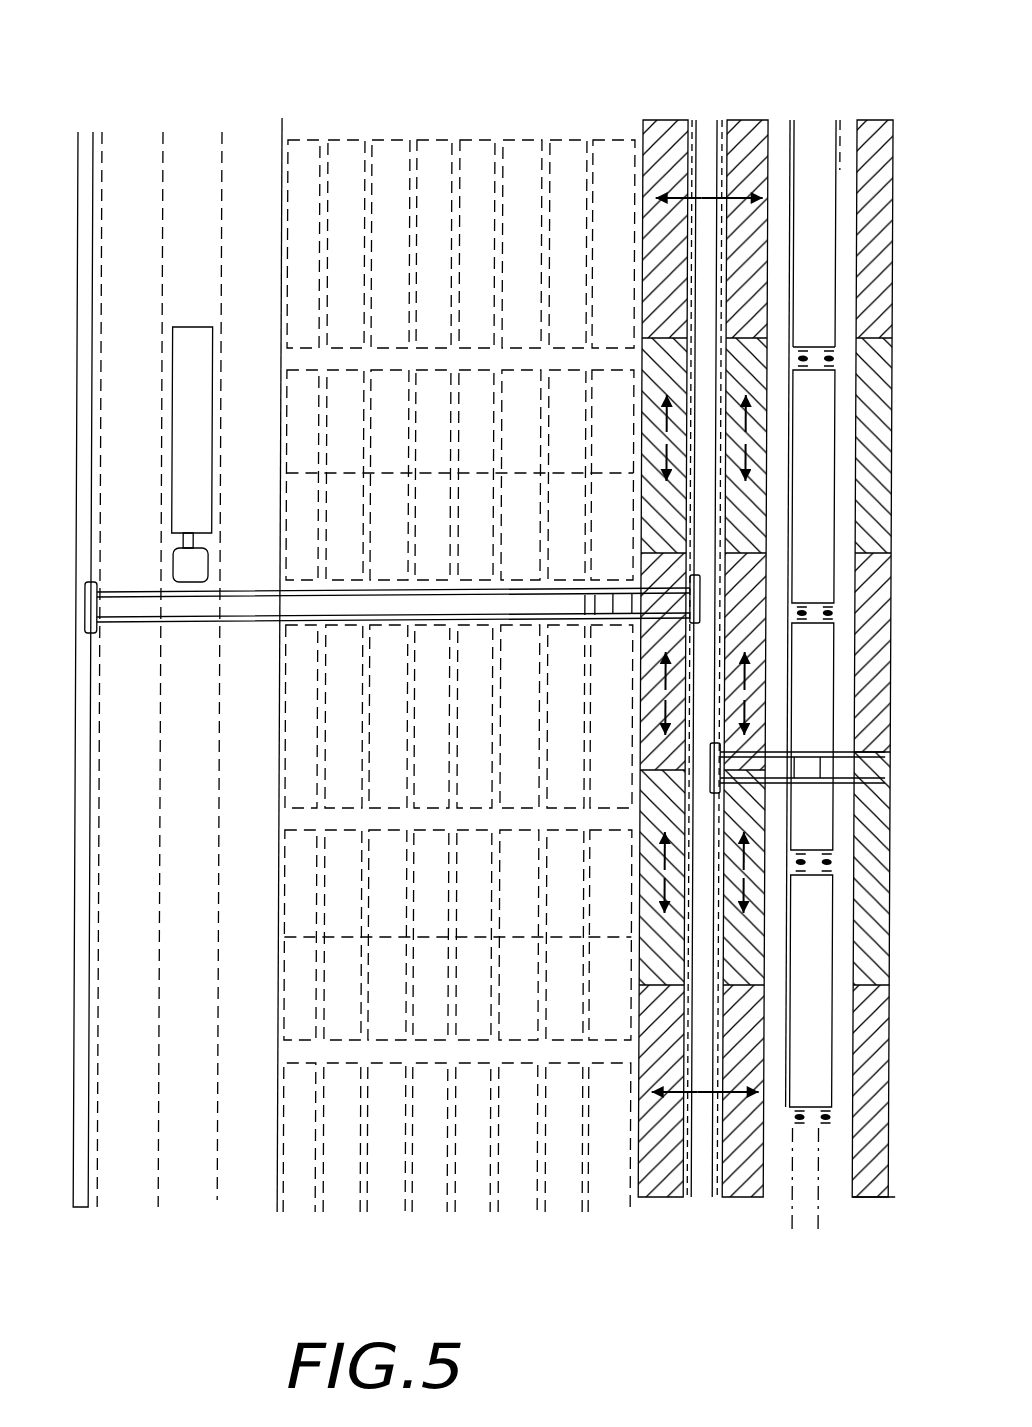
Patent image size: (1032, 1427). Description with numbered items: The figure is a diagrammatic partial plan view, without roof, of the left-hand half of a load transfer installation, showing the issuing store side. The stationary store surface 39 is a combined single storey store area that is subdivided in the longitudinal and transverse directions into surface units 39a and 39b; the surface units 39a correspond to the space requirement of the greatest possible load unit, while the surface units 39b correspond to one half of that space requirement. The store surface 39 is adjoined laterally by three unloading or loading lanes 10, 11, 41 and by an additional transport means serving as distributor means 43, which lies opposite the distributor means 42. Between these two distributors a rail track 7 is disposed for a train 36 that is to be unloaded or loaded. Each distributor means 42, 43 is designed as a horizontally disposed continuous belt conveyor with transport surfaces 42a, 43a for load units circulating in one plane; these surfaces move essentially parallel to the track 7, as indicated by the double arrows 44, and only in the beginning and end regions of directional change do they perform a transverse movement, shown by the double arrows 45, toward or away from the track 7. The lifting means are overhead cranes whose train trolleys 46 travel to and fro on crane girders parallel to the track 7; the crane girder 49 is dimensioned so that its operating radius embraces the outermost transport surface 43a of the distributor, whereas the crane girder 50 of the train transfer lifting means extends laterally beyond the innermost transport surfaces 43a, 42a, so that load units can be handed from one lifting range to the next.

The rail track 7 is at (815, 1210).
The loading lane 10 is at (260, 1148).
The loading lane 11 is at (193, 1138).
The train 36 is at (815, 155).
The store surface 39 is at (350, 359).
The surface unit 39a is at (387, 160).
The surface unit 39b is at (302, 970).
The loading lane 41 is at (133, 1140).
The distributor means 42 is at (847, 1212).
The transport surface 42a is at (890, 157).
The distributor means 43 is at (667, 1224).
The transport surface 43a is at (661, 1137).
The double arrows 44 is at (748, 440).
The double arrows 45 is at (706, 192).
The train trolley 46 is at (615, 628).
The crane girder 49 is at (130, 625).
The crane girder 50 is at (811, 790).